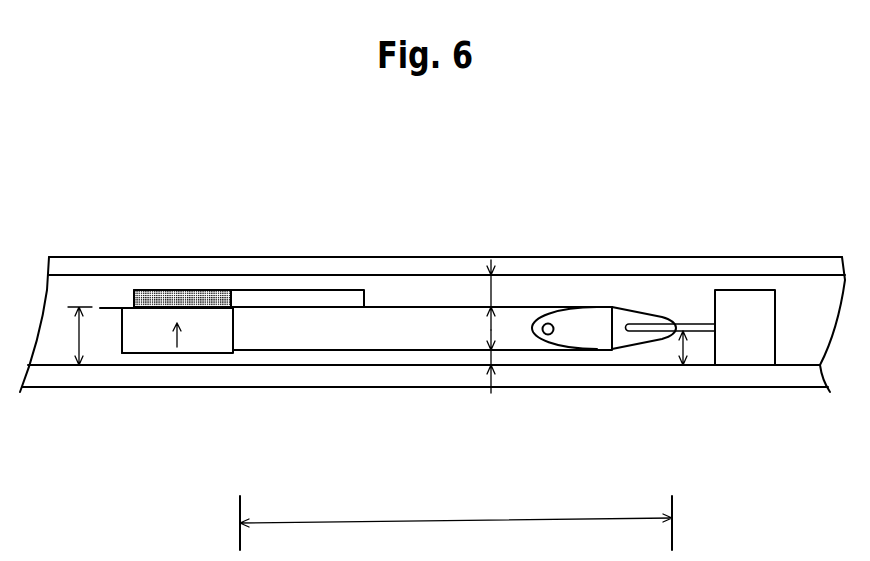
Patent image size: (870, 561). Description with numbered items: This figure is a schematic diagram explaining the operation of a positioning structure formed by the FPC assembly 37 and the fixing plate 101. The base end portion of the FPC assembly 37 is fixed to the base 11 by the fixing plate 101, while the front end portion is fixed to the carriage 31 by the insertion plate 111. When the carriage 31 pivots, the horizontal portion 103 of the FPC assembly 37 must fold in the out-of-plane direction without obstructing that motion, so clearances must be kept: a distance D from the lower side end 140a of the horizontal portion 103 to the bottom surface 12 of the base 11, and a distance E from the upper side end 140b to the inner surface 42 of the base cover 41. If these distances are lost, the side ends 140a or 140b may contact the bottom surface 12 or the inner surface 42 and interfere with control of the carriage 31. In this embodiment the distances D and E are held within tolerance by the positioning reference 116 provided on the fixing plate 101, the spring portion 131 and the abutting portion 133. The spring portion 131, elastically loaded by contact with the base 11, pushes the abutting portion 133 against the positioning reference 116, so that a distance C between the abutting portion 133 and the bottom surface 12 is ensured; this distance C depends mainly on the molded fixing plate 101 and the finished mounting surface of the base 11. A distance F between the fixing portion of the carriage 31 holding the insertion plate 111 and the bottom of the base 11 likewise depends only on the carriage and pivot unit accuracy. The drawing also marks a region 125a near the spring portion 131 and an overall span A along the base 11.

The base 11 is at (298, 392).
The bottom surface of the base 12 is at (542, 362).
The carriage 31 is at (735, 290).
The FPC assembly 37 is at (113, 297).
The base cover 41 is at (205, 257).
The inner surface of the base cover 42 is at (553, 278).
The fixing plate 101 is at (288, 290).
The horizontal portion 103 is at (417, 282).
The insertion plate 111 is at (625, 307).
The positioning reference 116 is at (252, 316).
The lower edge of holder 125a is at (136, 338).
The spring portion 131 is at (173, 356).
The abutting portion 133 is at (232, 307).
The side end of the horizontal portion 140a is at (402, 351).
The side end of the horizontal portion 140b is at (393, 307).
The dimension A is at (456, 522).
The distance C is at (74, 336).
The distance D is at (493, 375).
The distance E is at (501, 295).
The distance F is at (693, 348).